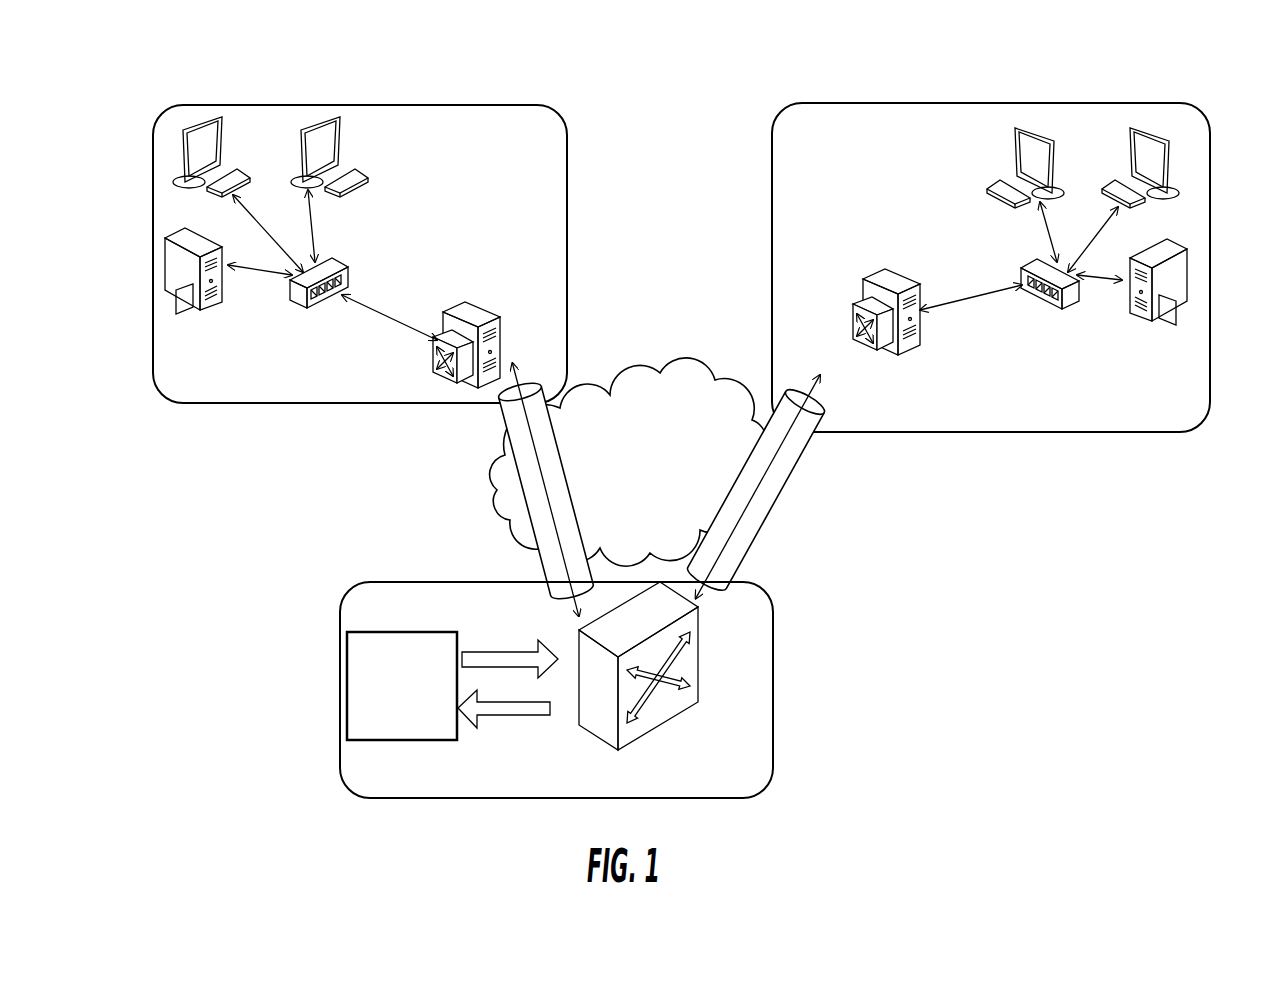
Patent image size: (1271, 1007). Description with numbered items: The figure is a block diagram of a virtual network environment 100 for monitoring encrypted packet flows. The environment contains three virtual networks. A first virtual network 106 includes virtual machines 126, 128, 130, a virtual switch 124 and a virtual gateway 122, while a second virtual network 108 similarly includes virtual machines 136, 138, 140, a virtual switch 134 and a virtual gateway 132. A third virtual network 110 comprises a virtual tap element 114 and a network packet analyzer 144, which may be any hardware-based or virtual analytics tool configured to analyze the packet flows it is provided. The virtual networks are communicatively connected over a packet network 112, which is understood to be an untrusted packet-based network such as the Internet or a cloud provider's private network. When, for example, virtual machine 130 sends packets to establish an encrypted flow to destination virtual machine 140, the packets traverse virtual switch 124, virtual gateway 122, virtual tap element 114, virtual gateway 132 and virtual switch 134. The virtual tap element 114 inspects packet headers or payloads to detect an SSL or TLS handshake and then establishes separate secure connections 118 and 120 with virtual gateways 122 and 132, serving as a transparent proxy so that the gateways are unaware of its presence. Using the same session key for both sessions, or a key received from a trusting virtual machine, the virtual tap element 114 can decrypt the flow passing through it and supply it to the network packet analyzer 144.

The virtual network environment 100 is at (716, 84).
The virtual network 106 is at (504, 104).
The virtual network 108 is at (1124, 103).
The virtual network 110 is at (769, 597).
The network 112 is at (722, 386).
The virtual tap element 114 is at (700, 636).
The secure connection 118 is at (511, 452).
The secure connection 120 is at (793, 460).
The virtual gateway 122 is at (465, 302).
The virtual switch 124 is at (341, 262).
The virtual machine 126 is at (338, 146).
The virtual machine 128 is at (186, 128).
The virtual machine 130 is at (166, 246).
The virtual gateway 132 is at (863, 272).
The virtual switch 134 is at (1025, 272).
The virtual machine 136 is at (1012, 158).
The virtual machine 138 is at (1172, 178).
The virtual machine 140 is at (1191, 262).
The network packet analyzer 144 is at (347, 630).